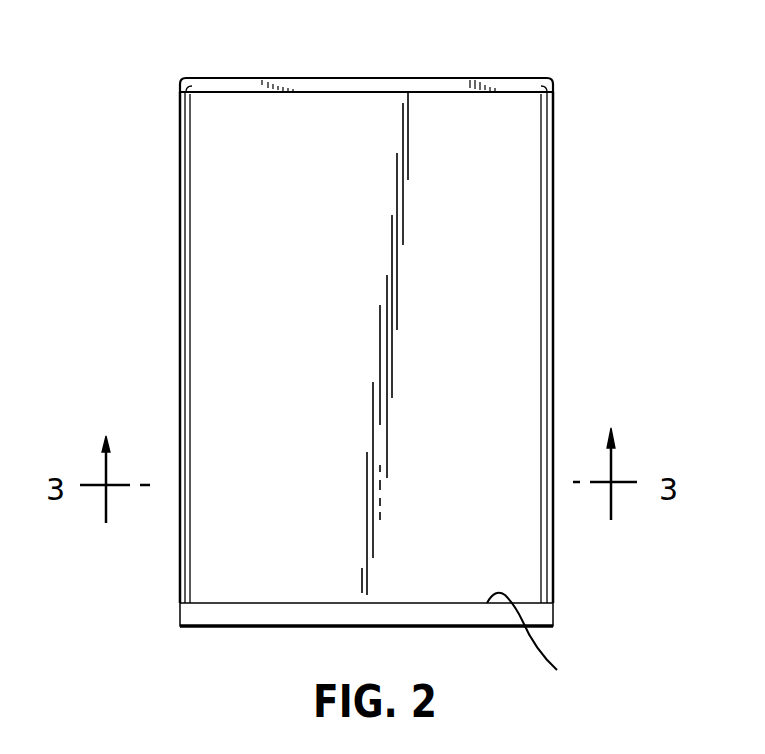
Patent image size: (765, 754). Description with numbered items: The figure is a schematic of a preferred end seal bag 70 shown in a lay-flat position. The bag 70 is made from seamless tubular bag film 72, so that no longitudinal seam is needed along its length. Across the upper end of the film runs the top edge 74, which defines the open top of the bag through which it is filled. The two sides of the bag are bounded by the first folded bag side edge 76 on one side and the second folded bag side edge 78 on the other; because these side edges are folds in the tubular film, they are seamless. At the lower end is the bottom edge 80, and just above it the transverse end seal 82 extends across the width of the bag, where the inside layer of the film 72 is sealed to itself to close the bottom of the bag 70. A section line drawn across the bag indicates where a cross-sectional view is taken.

The end seal bag 70 is at (361, 368).
The seamless tubular bag film 72 is at (520, 257).
The top edge 74 is at (410, 92).
The first folded bag side edge 76 is at (180, 318).
The second folded bag side edge 78 is at (553, 348).
The bottom edge 80 is at (203, 628).
The transverse end seal 82 is at (543, 653).